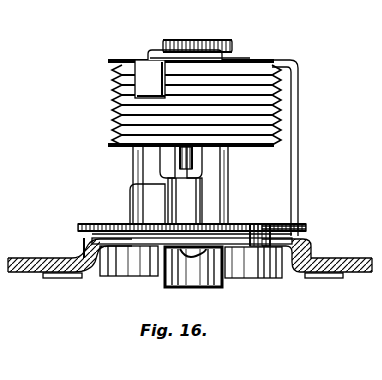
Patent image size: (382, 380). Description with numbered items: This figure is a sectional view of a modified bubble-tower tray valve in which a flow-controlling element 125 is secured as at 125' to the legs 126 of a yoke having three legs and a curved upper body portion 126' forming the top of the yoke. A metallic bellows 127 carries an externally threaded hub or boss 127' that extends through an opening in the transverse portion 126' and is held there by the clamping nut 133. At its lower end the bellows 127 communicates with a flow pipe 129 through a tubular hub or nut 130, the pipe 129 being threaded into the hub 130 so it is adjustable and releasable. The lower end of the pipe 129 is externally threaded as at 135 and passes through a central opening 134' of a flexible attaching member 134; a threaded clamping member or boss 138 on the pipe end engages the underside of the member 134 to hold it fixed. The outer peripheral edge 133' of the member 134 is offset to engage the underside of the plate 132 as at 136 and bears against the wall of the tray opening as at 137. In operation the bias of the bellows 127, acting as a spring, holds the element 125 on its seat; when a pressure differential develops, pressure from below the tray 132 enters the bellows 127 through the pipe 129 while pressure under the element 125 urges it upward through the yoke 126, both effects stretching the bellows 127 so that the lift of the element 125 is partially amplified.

The flow-controlling element 125 is at (191, 212).
The securing point 125' is at (302, 210).
The legs of yoke 126 is at (315, 165).
The curved upper body portion of yoke 126' is at (297, 64).
The metallic bellows 127 is at (171, 103).
The externally threaded hub or boss 127' is at (199, 38).
The flow pipe 129 is at (213, 243).
The tubular hub or nut 130 is at (226, 179).
The plate 132 is at (364, 258).
The clamping nut 133 is at (133, 64).
The outer peripheral edge 133' is at (330, 289).
The flexible attaching member 134 is at (253, 273).
The central opening 134' is at (192, 224).
The externally threaded lower end 135 is at (166, 279).
The engagement with underside of plate 136 is at (77, 279).
The bearing against tray opening wall 137 is at (85, 240).
The threaded clamping member or boss 138 is at (185, 280).